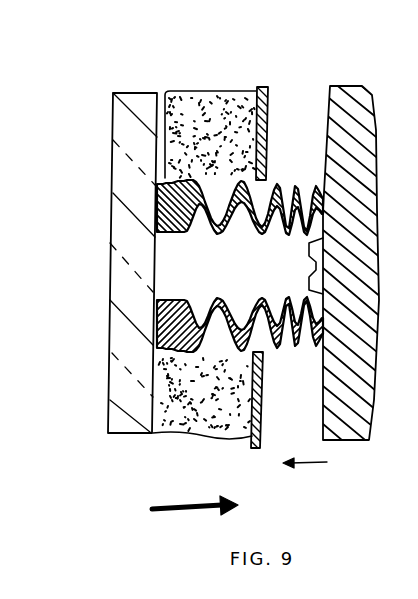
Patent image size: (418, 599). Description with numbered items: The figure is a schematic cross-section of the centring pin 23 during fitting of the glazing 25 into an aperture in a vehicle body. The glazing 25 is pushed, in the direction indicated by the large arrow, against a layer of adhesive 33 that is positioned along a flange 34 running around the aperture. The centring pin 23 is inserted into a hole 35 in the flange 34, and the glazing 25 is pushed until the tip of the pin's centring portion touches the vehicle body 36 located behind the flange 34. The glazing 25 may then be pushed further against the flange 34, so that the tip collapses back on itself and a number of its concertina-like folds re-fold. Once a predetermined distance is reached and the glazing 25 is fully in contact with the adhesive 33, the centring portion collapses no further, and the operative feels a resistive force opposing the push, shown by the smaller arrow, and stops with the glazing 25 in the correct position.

The centring pin 23 is at (265, 437).
The glazing 25 is at (125, 416).
The layer of adhesive 33 is at (210, 97).
The flange 34 is at (270, 87).
The hole 35 is at (272, 184).
The vehicle body 36 is at (357, 150).